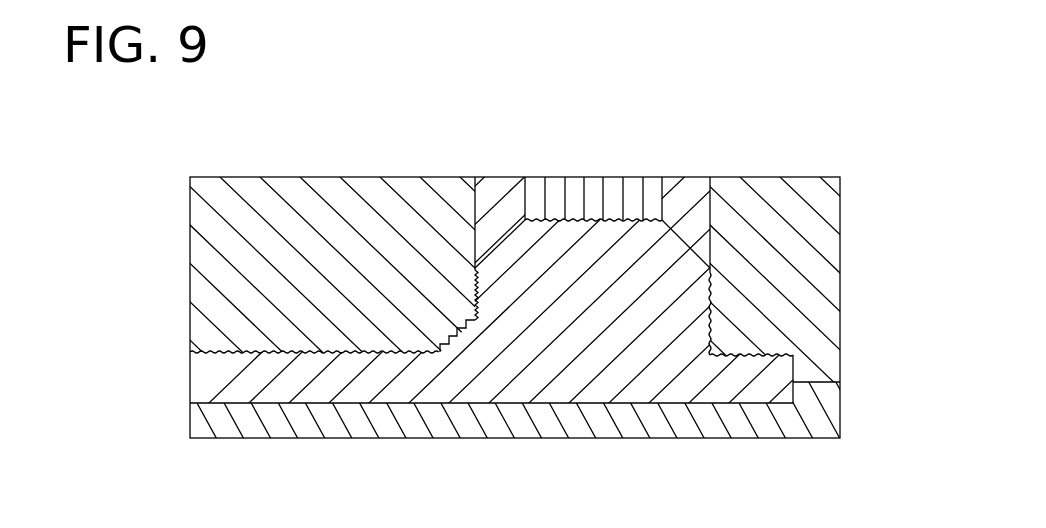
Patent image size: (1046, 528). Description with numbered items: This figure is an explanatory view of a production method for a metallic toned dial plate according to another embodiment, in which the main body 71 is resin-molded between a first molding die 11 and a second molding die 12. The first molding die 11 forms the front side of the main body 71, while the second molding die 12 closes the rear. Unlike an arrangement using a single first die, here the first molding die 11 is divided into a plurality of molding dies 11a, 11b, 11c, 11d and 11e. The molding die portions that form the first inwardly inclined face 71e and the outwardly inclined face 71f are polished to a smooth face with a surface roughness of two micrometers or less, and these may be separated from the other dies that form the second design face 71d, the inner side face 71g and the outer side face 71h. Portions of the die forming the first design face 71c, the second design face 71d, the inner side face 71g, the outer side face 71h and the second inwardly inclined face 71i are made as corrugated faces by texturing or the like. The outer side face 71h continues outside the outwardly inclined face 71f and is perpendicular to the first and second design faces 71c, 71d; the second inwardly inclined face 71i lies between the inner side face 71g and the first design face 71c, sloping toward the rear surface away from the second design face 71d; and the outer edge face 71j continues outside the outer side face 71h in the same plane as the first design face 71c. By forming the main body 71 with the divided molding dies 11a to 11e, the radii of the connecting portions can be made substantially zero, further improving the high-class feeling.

The first molding die 11 is at (842, 287).
The molding die 11a is at (205, 318).
The molding die 11b is at (487, 193).
The molding die 11c is at (645, 190).
The molding die 11d is at (698, 197).
The molding die 11e is at (825, 322).
The second molding die 12 is at (835, 407).
The main body 71 is at (653, 247).
The first design face 71c is at (322, 352).
The second design face 71d is at (578, 230).
The first inwardly inclined face 71e is at (495, 256).
The outwardly inclined face 71f is at (673, 257).
The inner side face 71g is at (487, 292).
The outer side face 71h is at (718, 350).
The second inwardly inclined face 71i is at (450, 325).
The outer edge face 71j is at (767, 353).